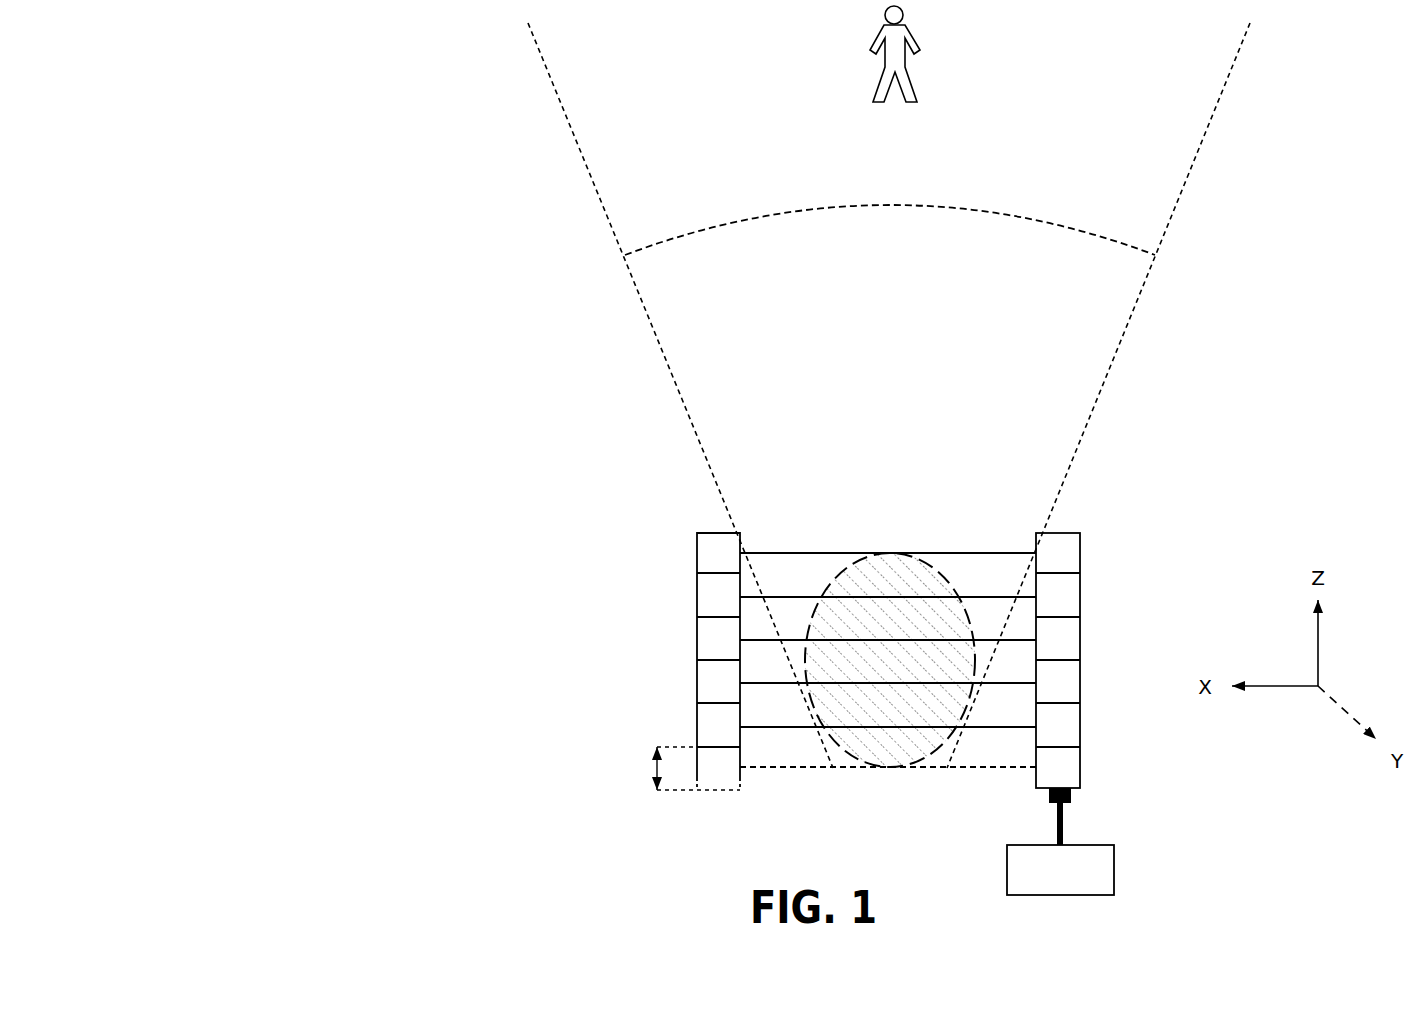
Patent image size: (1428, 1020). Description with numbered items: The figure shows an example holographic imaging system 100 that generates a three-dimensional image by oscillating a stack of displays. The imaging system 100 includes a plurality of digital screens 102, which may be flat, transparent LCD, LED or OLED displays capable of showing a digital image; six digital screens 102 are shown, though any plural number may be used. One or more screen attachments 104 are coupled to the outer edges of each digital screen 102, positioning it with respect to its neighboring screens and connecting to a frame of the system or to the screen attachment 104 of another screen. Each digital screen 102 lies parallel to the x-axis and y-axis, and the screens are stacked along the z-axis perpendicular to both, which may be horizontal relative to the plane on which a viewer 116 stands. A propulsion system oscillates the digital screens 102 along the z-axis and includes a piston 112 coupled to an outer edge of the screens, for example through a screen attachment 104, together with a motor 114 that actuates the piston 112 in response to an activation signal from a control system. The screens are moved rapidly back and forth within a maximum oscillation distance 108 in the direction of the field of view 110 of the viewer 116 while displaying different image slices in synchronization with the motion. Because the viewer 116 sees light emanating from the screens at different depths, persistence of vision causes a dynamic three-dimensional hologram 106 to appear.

The holographic imaging system 100 is at (168, 126).
The digital screen 102 is at (803, 552).
The screen attachment 104 is at (713, 530).
The hologram 106 is at (807, 618).
The maximum oscillation distance 108 is at (648, 752).
The field of view 110 is at (889, 395).
The piston 112 is at (1063, 815).
The motor 114 is at (1114, 867).
The viewer 116 is at (912, 73).